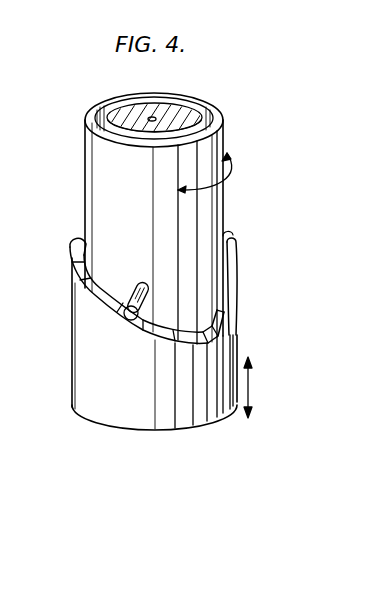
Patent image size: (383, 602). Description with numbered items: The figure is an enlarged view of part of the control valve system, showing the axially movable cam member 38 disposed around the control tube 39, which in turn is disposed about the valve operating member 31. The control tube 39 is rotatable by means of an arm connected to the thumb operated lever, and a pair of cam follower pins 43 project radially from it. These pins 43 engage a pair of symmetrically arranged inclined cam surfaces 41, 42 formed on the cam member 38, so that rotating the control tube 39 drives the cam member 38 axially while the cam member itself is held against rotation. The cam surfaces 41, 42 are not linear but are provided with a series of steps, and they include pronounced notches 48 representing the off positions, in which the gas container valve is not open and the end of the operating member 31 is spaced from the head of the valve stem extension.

The operating member 31 is at (178, 112).
The cam member 38 is at (98, 402).
The control tube 39 is at (218, 117).
The inclined cam surface 41 is at (80, 288).
The inclined cam surface 42 is at (226, 234).
The cam follower pin 43 is at (137, 283).
The notch 48 is at (225, 328).